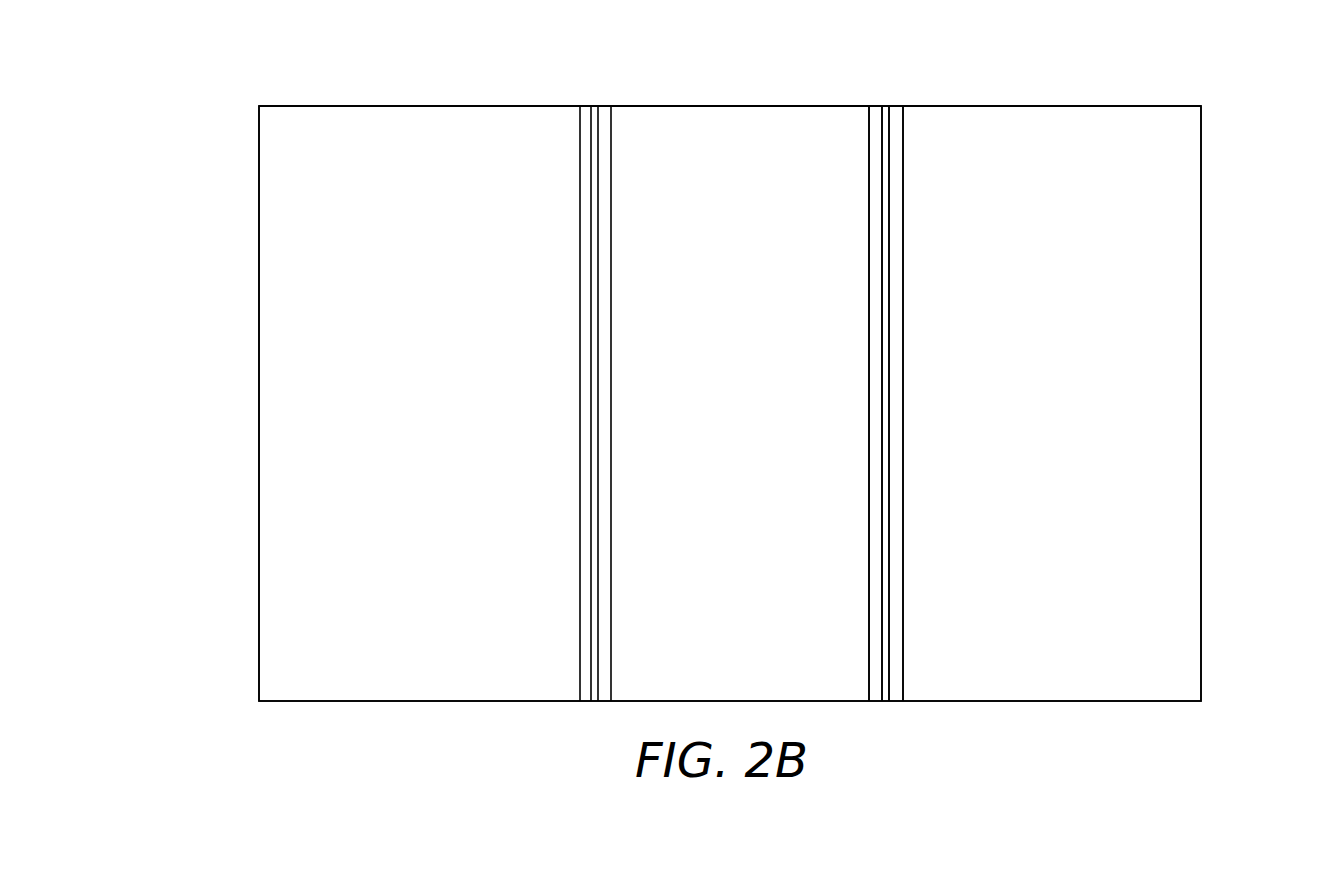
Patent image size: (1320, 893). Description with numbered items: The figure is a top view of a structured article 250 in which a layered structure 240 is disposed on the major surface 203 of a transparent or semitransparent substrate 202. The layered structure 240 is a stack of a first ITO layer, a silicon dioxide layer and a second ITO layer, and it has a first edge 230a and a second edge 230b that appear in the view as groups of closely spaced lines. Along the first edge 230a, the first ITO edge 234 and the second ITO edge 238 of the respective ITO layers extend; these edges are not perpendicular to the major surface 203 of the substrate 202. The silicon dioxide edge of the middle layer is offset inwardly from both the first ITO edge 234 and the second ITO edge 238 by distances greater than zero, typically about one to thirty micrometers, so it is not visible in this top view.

The structured article 250 is at (216, 59).
The substrate 202 is at (1201, 203).
The major surface 203 is at (1185, 131).
The layered structure 240 is at (711, 133).
The first edge 230a is at (875, 357).
The second edge 230b is at (605, 357).
The second ITO edge 238 is at (875, 152).
The first ITO edge 234 is at (897, 205).